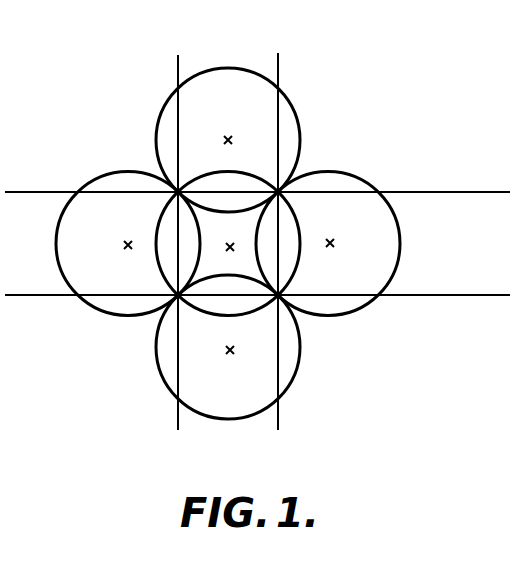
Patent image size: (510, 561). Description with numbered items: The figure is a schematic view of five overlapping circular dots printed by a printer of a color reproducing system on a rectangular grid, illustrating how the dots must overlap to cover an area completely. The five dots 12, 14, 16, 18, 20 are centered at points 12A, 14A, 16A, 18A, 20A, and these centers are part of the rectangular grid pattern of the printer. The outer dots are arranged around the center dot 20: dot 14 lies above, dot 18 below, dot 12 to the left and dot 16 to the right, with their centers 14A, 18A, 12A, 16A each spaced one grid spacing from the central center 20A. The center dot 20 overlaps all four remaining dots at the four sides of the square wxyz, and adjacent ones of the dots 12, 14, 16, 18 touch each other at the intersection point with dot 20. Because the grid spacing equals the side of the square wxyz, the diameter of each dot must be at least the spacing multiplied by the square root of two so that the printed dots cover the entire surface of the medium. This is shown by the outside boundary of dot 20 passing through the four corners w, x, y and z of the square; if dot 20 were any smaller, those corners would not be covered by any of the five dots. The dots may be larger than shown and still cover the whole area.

The dot 12 is at (76, 240).
The center of dot 12A is at (130, 231).
The dot 14 is at (220, 82).
The center of dot 14A is at (230, 127).
The dot 16 is at (382, 243).
The center of dot 16A is at (342, 229).
The dot 18 is at (231, 418).
The center of dot 18A is at (235, 367).
The center dot 20 is at (248, 223).
The center of center dot 20A is at (228, 233).
The corner of square w is at (178, 192).
The corner of square x is at (178, 295).
The corner of square y is at (278, 295).
The corner of square z is at (280, 191).